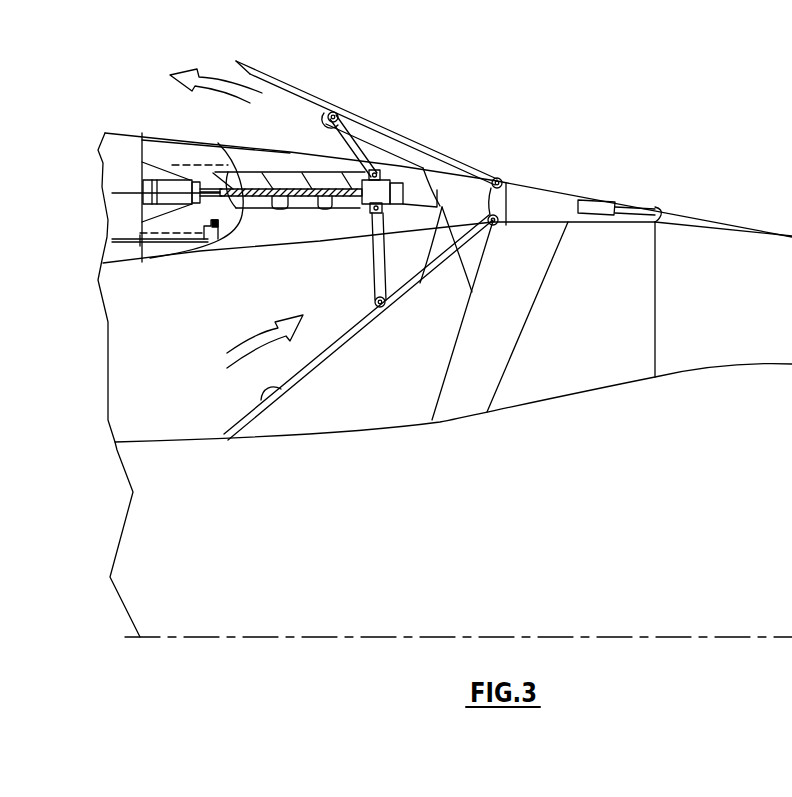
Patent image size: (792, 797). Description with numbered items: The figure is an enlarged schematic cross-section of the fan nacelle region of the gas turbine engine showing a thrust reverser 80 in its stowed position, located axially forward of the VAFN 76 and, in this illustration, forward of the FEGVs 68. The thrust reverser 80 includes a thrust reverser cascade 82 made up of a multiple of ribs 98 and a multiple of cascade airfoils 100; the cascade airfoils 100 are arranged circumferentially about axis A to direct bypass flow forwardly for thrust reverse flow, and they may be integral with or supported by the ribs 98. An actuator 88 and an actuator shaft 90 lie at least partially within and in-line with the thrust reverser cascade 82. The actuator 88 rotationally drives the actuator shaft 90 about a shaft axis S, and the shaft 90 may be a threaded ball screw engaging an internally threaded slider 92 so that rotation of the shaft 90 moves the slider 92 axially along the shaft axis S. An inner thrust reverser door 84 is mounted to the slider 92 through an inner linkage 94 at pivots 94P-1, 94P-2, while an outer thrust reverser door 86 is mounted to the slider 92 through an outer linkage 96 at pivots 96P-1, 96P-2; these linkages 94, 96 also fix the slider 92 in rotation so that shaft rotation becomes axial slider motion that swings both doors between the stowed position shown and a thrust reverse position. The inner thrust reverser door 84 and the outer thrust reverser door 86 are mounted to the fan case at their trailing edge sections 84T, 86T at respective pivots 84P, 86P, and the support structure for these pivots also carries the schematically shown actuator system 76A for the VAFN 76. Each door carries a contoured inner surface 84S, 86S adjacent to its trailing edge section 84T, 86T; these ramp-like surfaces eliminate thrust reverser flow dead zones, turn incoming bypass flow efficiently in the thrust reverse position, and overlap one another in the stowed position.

The fan exit guide vanes 68 is at (505, 347).
The VAFN 76 is at (718, 222).
The actuator system 76A is at (597, 206).
The thrust reverser 80 is at (414, 110).
The thrust reverser cascade 82 is at (280, 216).
The inner thrust reverser door 84 is at (338, 358).
The pivot 84P is at (504, 235).
The contoured inner surface 84S is at (472, 292).
The trailing edge section 84T is at (484, 166).
The outer thrust reverser door 86 is at (256, 62).
The pivot 86P is at (503, 177).
The contoured inner surface 86S is at (408, 157).
The trailing edge section 86T is at (504, 238).
The actuator 88 is at (165, 187).
The actuator shaft 90 is at (238, 178).
The slider 92 is at (362, 206).
The inner linkage 94 is at (383, 280).
The pivot 94P-1 is at (370, 207).
The pivot 94P-2 is at (367, 308).
The outer linkage 96 is at (323, 127).
The pivot 96P-1 is at (374, 170).
The pivot 96P-2 is at (333, 112).
The ribs 98 is at (243, 215).
The cascade airfoils 100 is at (283, 172).
The shaft axis S is at (127, 193).
The axis A is at (703, 637).